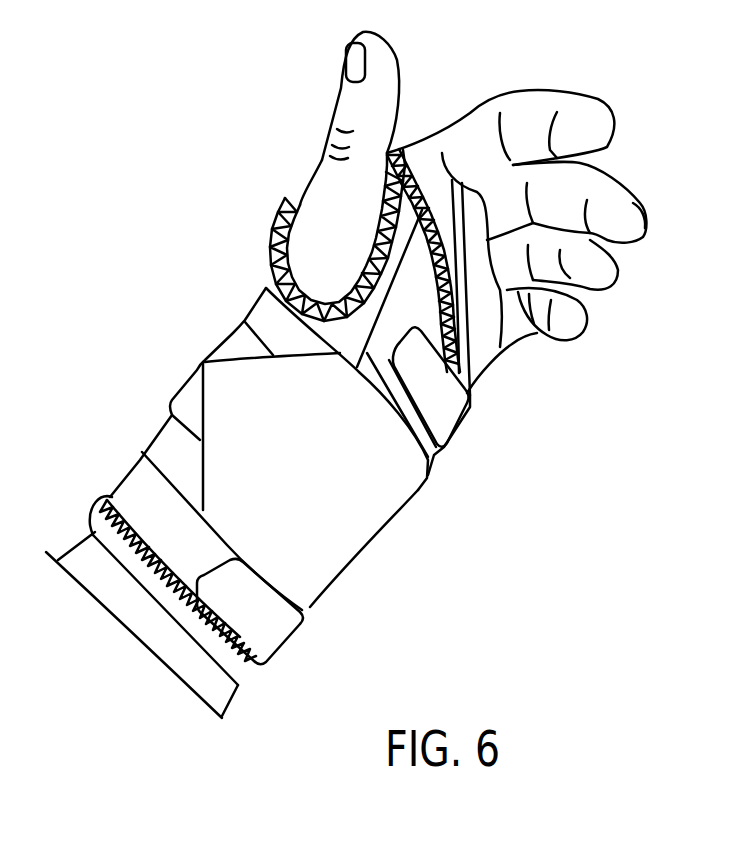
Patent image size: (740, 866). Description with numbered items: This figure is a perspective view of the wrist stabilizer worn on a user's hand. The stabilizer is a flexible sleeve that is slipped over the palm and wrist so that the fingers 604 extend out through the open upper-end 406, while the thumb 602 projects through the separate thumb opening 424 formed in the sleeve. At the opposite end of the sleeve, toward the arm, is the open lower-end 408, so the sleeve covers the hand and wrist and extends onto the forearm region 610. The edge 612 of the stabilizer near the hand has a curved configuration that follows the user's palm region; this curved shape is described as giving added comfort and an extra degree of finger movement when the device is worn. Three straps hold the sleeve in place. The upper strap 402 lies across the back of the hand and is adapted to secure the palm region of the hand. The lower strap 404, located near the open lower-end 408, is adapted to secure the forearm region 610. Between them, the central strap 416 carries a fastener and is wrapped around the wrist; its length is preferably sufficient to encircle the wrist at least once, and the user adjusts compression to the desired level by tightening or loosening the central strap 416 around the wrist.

The thumb 602 is at (380, 80).
The fingers 604 is at (580, 120).
The edge 612 is at (500, 292).
The open upper-end 406 is at (500, 353).
The upper strap 402 is at (458, 410).
The central strap 416 is at (418, 494).
The lower strap 404 is at (292, 638).
The forearm region 610 is at (236, 696).
The open lower-end 408 is at (108, 560).
The thumb opening 424 is at (285, 209).